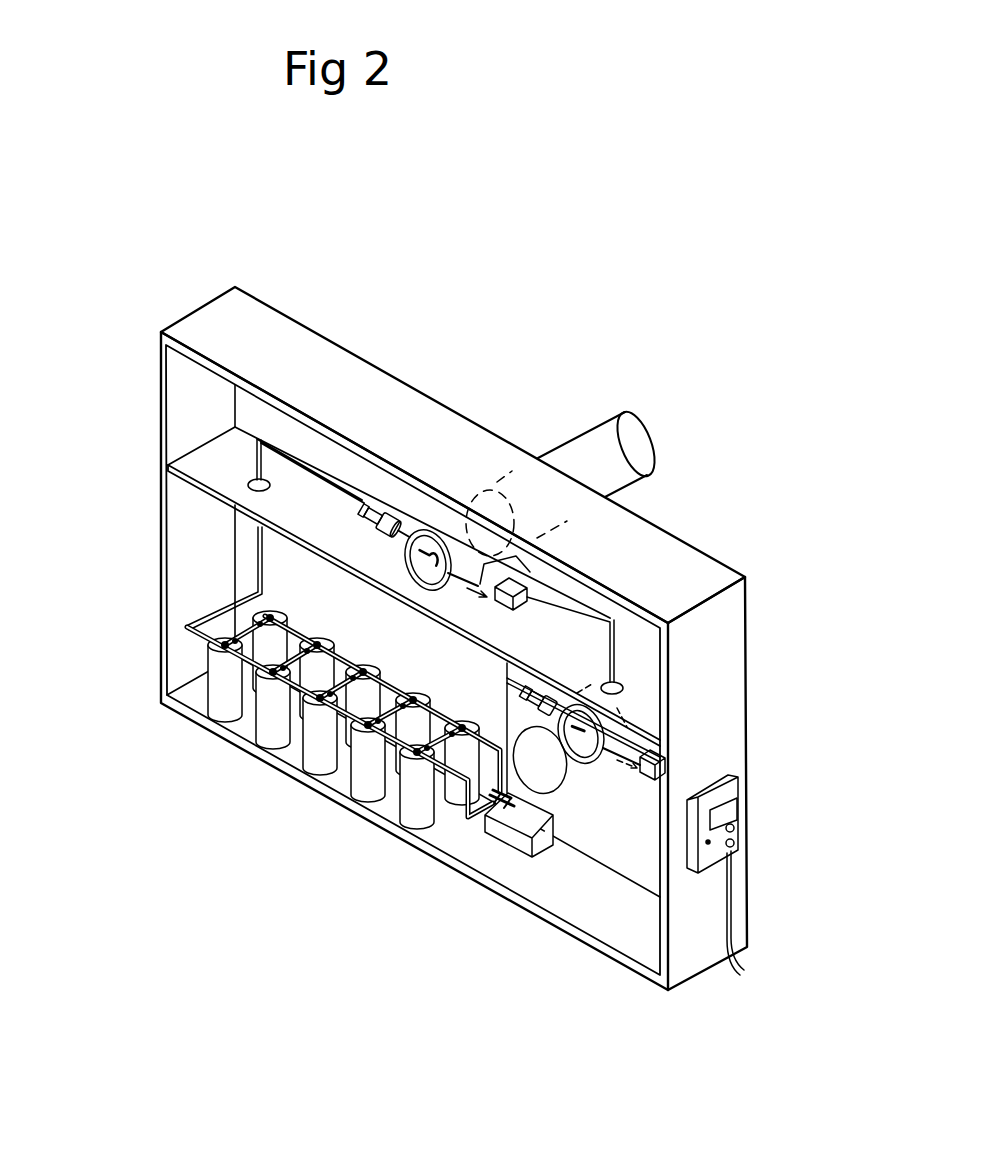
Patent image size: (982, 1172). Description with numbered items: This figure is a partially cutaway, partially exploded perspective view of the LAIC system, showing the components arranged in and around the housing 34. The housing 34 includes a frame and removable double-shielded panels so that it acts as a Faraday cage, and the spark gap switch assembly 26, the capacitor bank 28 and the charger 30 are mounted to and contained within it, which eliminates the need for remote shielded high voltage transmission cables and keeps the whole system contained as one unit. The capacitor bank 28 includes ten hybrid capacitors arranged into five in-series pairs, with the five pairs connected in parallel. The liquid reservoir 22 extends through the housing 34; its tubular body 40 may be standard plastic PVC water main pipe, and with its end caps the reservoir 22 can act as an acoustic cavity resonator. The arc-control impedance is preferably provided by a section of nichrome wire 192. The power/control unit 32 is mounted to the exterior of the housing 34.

The liquid reservoir 22 is at (386, 558).
The nichrome wire 192 is at (260, 563).
The tubular body 40 is at (602, 462).
The housing 34 is at (713, 695).
The power/control unit 32 is at (738, 822).
The capacitor bank 28 is at (297, 752).
The charger 30 is at (507, 840).
The spark gap switch assembly 26 is at (612, 780).